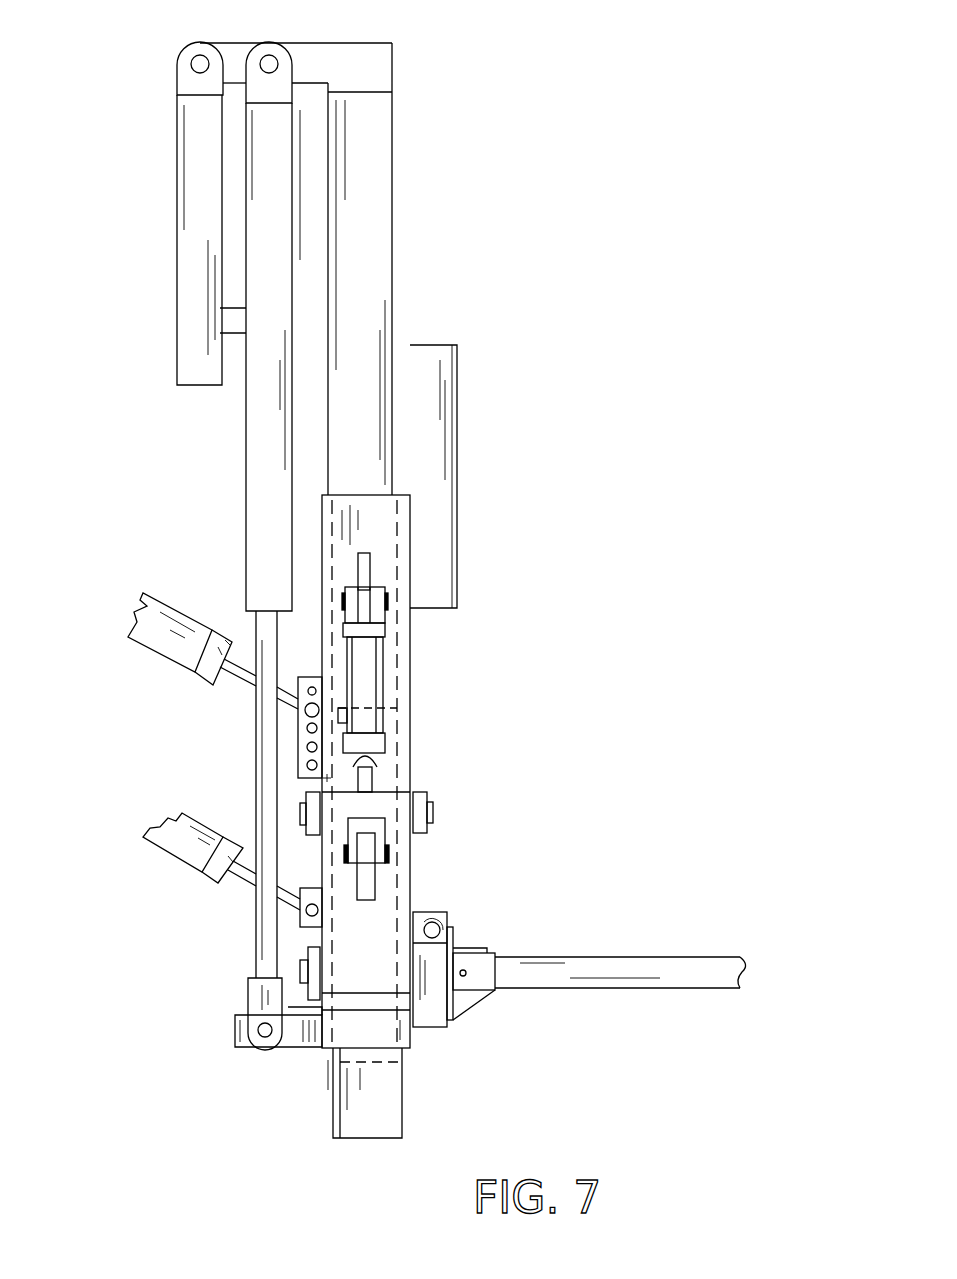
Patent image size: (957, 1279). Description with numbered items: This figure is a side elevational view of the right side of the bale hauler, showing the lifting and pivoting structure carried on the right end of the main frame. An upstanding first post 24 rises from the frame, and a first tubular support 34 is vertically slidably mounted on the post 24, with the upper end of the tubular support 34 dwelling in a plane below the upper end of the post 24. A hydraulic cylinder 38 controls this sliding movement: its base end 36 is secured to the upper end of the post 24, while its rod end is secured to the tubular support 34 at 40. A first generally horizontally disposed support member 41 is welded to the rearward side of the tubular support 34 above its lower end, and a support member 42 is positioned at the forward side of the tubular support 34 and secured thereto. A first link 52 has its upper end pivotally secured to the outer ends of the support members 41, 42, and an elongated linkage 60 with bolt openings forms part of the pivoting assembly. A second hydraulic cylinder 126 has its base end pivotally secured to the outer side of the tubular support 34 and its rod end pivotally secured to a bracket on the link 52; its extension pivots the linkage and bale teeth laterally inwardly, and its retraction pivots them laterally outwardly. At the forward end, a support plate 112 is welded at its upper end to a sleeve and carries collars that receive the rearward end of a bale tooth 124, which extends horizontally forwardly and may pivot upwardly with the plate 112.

The first post 24 is at (368, 267).
The first tubular support 34 is at (405, 532).
The base end 36 is at (275, 57).
The hydraulic cylinder 38 is at (252, 450).
The rod end attachment point 40 is at (263, 1035).
The first support member 41 is at (308, 803).
The support member 42 is at (421, 801).
The first link 52 is at (405, 885).
The elongated linkage 60 is at (305, 953).
The support plate 112 is at (447, 1012).
The bale tooth 124 is at (683, 965).
The hydraulic cylinder 126 is at (370, 664).